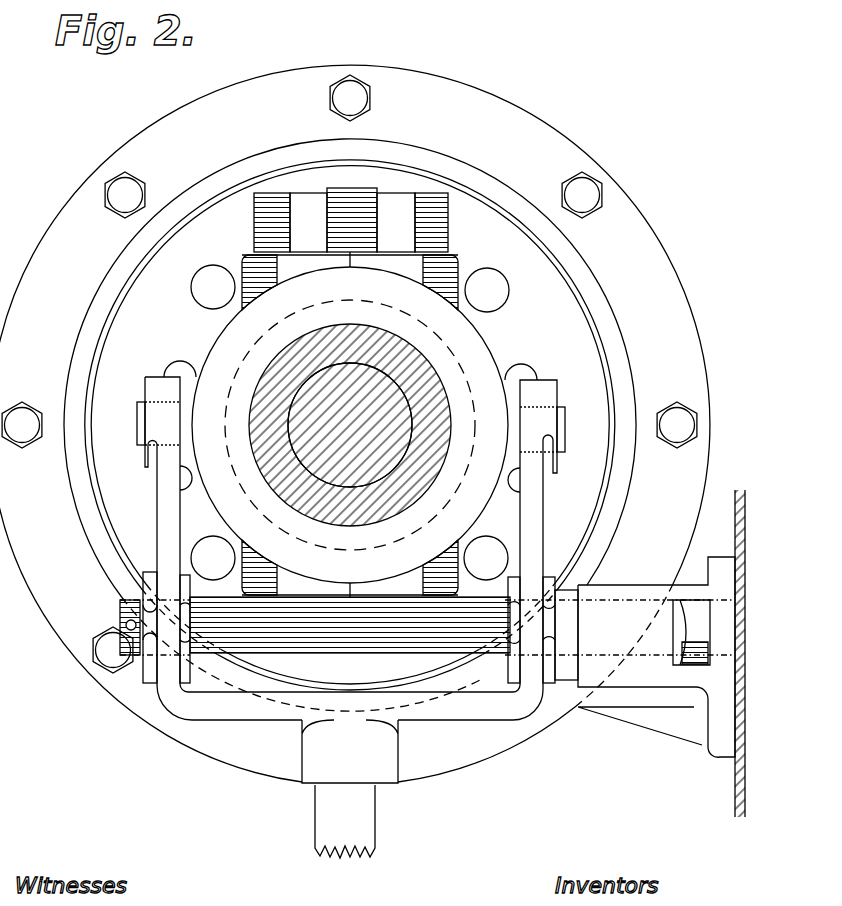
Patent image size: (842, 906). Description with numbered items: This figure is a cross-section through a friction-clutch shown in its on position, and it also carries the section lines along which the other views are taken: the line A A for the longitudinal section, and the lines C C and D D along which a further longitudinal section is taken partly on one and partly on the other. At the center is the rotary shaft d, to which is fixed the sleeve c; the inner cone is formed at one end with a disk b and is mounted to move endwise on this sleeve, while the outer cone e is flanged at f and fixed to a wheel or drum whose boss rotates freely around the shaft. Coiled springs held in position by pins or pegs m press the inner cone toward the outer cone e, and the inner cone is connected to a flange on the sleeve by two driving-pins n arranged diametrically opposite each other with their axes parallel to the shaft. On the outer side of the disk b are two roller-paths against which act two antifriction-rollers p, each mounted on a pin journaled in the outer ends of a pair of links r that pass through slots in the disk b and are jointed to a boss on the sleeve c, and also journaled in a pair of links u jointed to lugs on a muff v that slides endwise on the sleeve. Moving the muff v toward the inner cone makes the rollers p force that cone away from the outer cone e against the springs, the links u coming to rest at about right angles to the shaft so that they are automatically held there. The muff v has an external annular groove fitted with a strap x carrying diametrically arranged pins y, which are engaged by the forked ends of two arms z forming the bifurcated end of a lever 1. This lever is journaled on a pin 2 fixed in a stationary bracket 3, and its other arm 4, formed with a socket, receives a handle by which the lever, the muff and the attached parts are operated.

The section line A A is at (350, 75).
The section line C C is at (386, 432).
The section line D D is at (350, 425).
The flange f is at (355, 423).
The outer cone e is at (124, 256).
The disk b is at (353, 425).
The sleeve c is at (350, 425).
The rotary shaft d is at (350, 425).
The driving-pins n is at (350, 422).
The links r is at (351, 222).
The links u is at (352, 222).
The antifriction-rollers p is at (352, 220).
The strap x is at (350, 424).
The arms z is at (341, 548).
The pins y is at (572, 421).
The pins or pegs m is at (545, 364).
The muff v is at (350, 479).
The lever 1 is at (158, 693).
The pin 2 is at (349, 627).
The stationary bracket 3 is at (650, 653).
The arm 4 is at (372, 806).